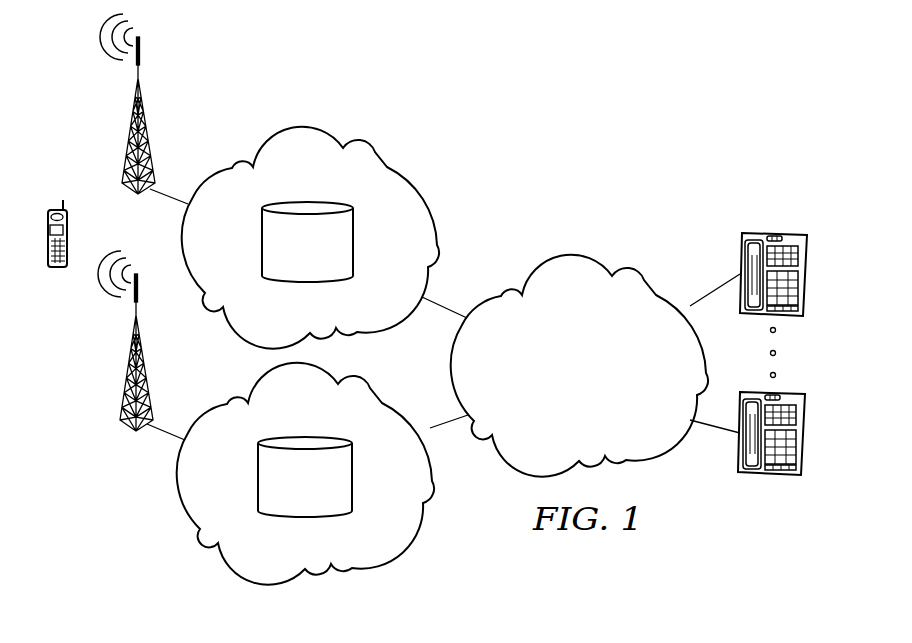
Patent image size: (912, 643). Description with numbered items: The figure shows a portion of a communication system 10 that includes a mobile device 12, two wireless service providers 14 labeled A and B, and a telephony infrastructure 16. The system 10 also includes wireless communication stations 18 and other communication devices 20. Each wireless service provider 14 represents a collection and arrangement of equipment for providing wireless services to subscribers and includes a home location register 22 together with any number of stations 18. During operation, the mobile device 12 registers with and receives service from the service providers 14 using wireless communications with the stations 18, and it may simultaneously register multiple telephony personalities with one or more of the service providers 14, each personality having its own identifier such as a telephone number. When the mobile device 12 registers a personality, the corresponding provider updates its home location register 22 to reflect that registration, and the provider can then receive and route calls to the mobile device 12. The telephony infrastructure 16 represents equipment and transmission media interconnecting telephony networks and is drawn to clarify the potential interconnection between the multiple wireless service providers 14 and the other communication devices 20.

The communication system 10 is at (569, 174).
The mobile device 12 is at (50, 209).
The wireless service provider 14 is at (300, 131).
The telephony infrastructure 16 is at (598, 385).
The wireless communication station 18 is at (127, 138).
The other communication device 20 is at (806, 272).
The home location register 22 is at (310, 203).